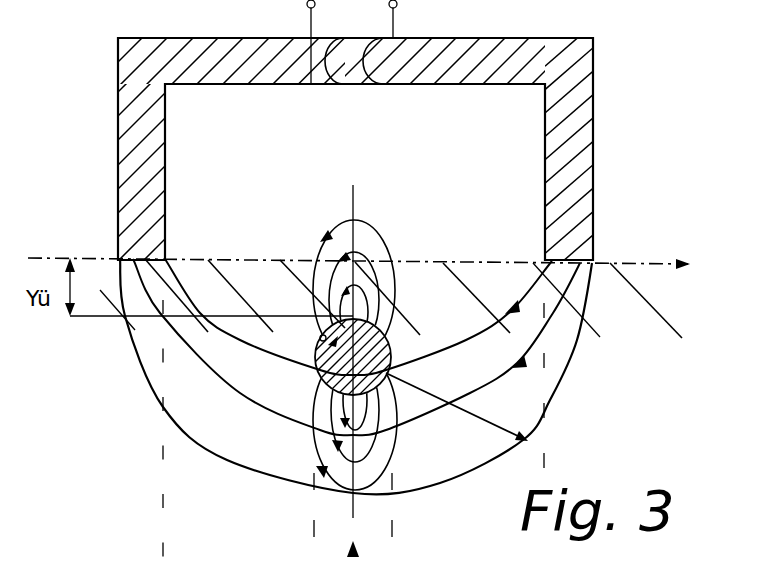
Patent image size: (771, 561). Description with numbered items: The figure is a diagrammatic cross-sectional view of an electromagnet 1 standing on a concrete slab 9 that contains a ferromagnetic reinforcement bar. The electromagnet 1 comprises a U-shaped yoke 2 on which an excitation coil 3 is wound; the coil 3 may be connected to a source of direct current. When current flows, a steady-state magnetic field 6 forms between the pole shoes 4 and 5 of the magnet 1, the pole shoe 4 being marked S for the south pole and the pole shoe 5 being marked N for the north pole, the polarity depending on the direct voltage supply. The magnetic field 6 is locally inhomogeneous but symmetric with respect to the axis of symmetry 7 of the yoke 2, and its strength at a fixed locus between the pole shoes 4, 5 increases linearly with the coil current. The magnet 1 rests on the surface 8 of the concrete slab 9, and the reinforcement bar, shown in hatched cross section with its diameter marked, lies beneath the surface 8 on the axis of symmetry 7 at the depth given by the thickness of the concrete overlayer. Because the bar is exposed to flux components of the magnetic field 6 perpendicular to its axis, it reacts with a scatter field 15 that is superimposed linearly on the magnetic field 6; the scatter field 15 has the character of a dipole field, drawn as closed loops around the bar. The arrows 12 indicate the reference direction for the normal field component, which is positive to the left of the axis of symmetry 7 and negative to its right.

The electromagnet 1 is at (608, 112).
The U-shaped yoke 2 is at (578, 171).
The excitation coil 3 is at (386, 86).
The pole shoe 4 is at (131, 243).
The pole shoe 5 is at (583, 243).
The magnetic field 6 is at (225, 462).
The axis of symmetry 7 is at (356, 200).
The surface 8 is at (477, 260).
The concrete slab 9 is at (448, 312).
The arrows 12 is at (525, 428).
The scatter field 15 is at (389, 242).